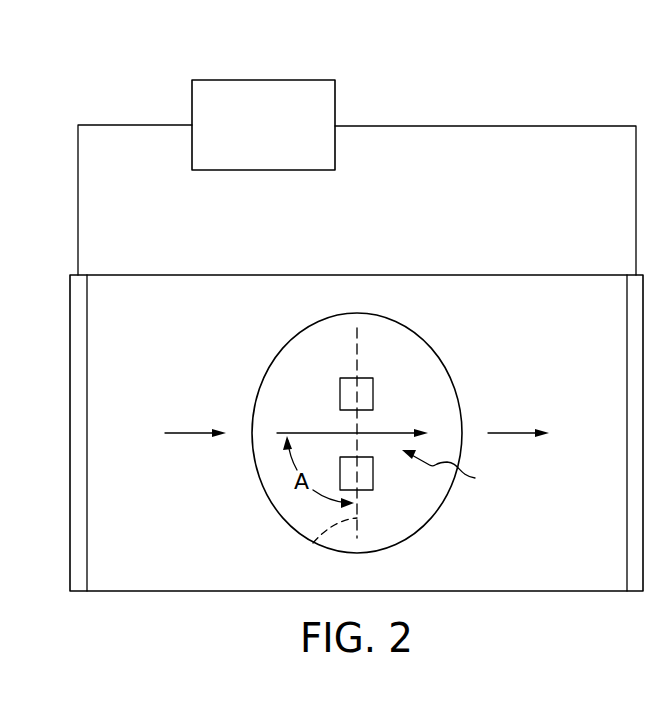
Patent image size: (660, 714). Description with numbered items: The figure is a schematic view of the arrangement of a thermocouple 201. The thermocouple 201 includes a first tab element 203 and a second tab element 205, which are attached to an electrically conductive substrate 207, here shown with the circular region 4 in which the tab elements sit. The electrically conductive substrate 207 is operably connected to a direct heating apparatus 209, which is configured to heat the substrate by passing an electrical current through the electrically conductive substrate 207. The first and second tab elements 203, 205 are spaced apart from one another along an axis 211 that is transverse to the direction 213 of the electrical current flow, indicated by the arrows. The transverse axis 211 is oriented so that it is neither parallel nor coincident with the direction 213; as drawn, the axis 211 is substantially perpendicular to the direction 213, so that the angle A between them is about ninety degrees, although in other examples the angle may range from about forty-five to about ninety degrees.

The rotor disc 4 is at (293, 338).
The thermocouple 201 is at (461, 471).
The first tab element 203 is at (373, 398).
The second tab element 205 is at (373, 468).
The electrically conductive substrate 207 is at (565, 591).
The direct heating apparatus 209 is at (258, 80).
The axis 211 is at (313, 543).
The direction of the electrical current flow 213 is at (180, 433).